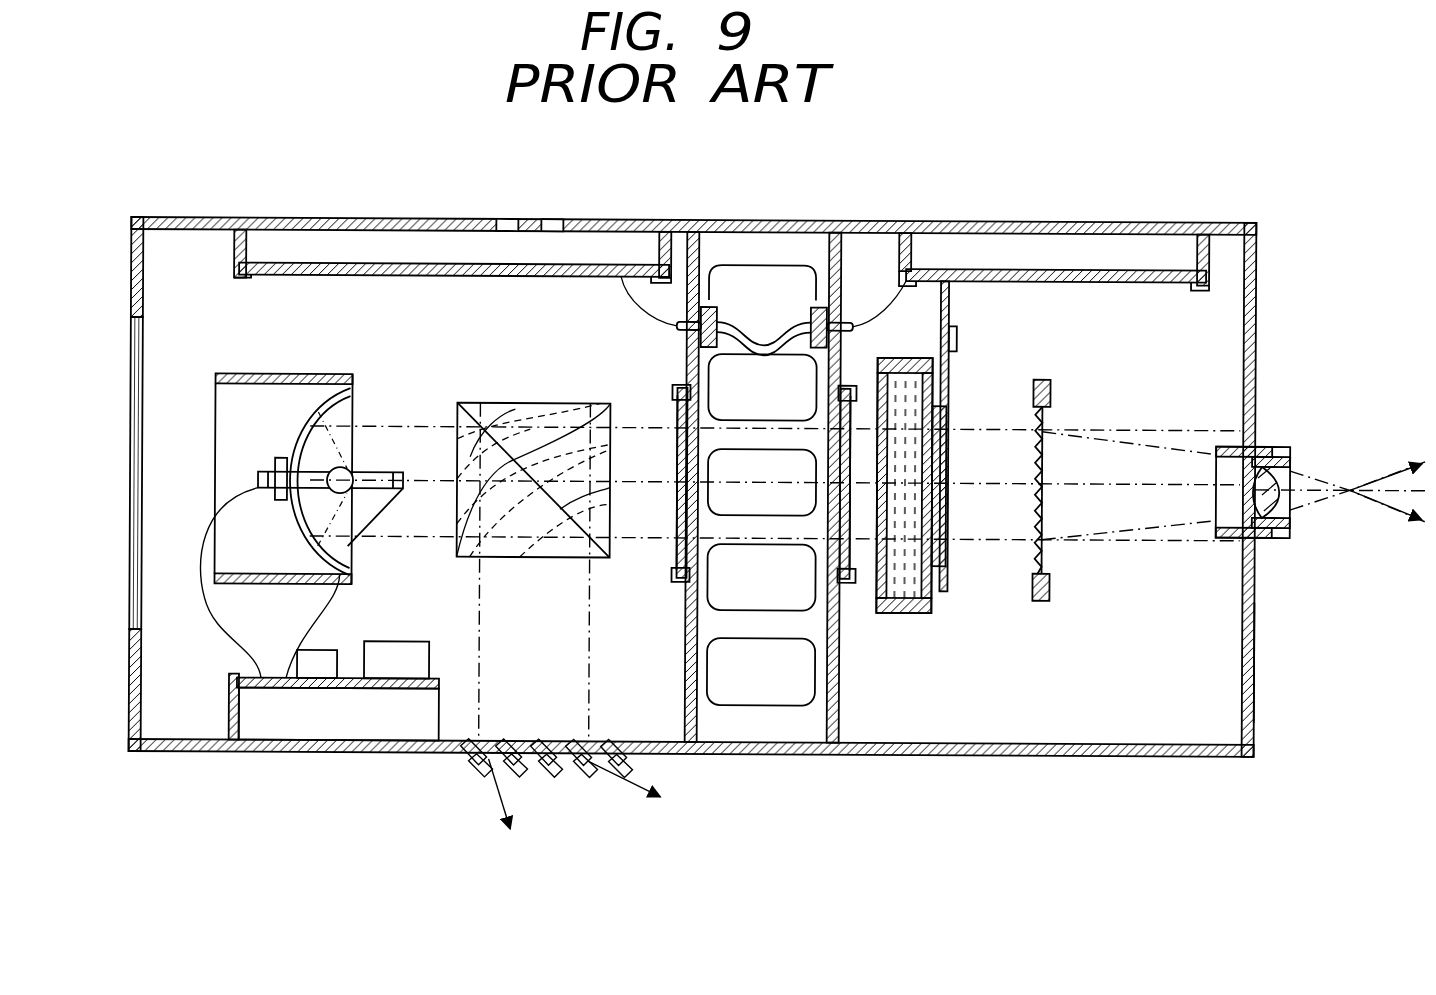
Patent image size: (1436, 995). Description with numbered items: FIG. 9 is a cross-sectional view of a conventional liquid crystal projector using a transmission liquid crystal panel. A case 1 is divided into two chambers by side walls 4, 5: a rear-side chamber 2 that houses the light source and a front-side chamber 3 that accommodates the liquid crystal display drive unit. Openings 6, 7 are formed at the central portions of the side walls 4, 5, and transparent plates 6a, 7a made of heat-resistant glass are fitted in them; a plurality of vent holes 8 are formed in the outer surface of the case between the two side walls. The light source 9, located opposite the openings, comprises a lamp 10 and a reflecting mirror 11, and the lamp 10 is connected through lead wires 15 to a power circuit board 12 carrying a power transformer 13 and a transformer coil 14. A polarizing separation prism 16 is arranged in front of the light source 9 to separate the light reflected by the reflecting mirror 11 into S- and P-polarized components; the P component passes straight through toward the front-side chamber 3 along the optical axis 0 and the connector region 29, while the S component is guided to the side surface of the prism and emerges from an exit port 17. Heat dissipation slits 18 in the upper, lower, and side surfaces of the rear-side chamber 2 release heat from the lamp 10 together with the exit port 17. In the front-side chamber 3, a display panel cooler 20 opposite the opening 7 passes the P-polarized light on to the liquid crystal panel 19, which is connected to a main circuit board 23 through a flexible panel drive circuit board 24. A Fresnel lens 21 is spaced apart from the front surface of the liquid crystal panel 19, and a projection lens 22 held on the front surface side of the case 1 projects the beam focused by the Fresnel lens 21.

The case 1 is at (1243, 222).
The rear-side chamber 2 is at (210, 220).
The front-side chamber 3 is at (1255, 680).
The side wall 4 is at (686, 698).
The side wall 5 is at (840, 700).
The opening 6 is at (674, 548).
The transparent plate 6a is at (677, 498).
The opening 7 is at (851, 548).
The transparent plate 7a is at (838, 508).
The vent holes 8 is at (745, 268).
The light source 9 is at (268, 372).
The lamp 10 is at (368, 487).
The reflecting mirror 11 is at (315, 432).
The power circuit board 12 is at (335, 690).
The power transformer 13 is at (400, 645).
The transformer coil 14 is at (318, 652).
The lead wires 15 is at (355, 583).
The polarizing separation prism 16 is at (543, 404).
The exit port 17 is at (580, 742).
The heat dissipation slits 18 is at (555, 220).
The liquid crystal panel 19 is at (944, 565).
The display panel cooler 20 is at (922, 615).
The Fresnel lens 21 is at (1043, 415).
The projection lens 22 is at (1290, 470).
The main circuit board 23 is at (1120, 280).
The panel drive circuit board 24 is at (948, 300).
The connector 29 is at (680, 322).
The optical axis 0 is at (628, 482).